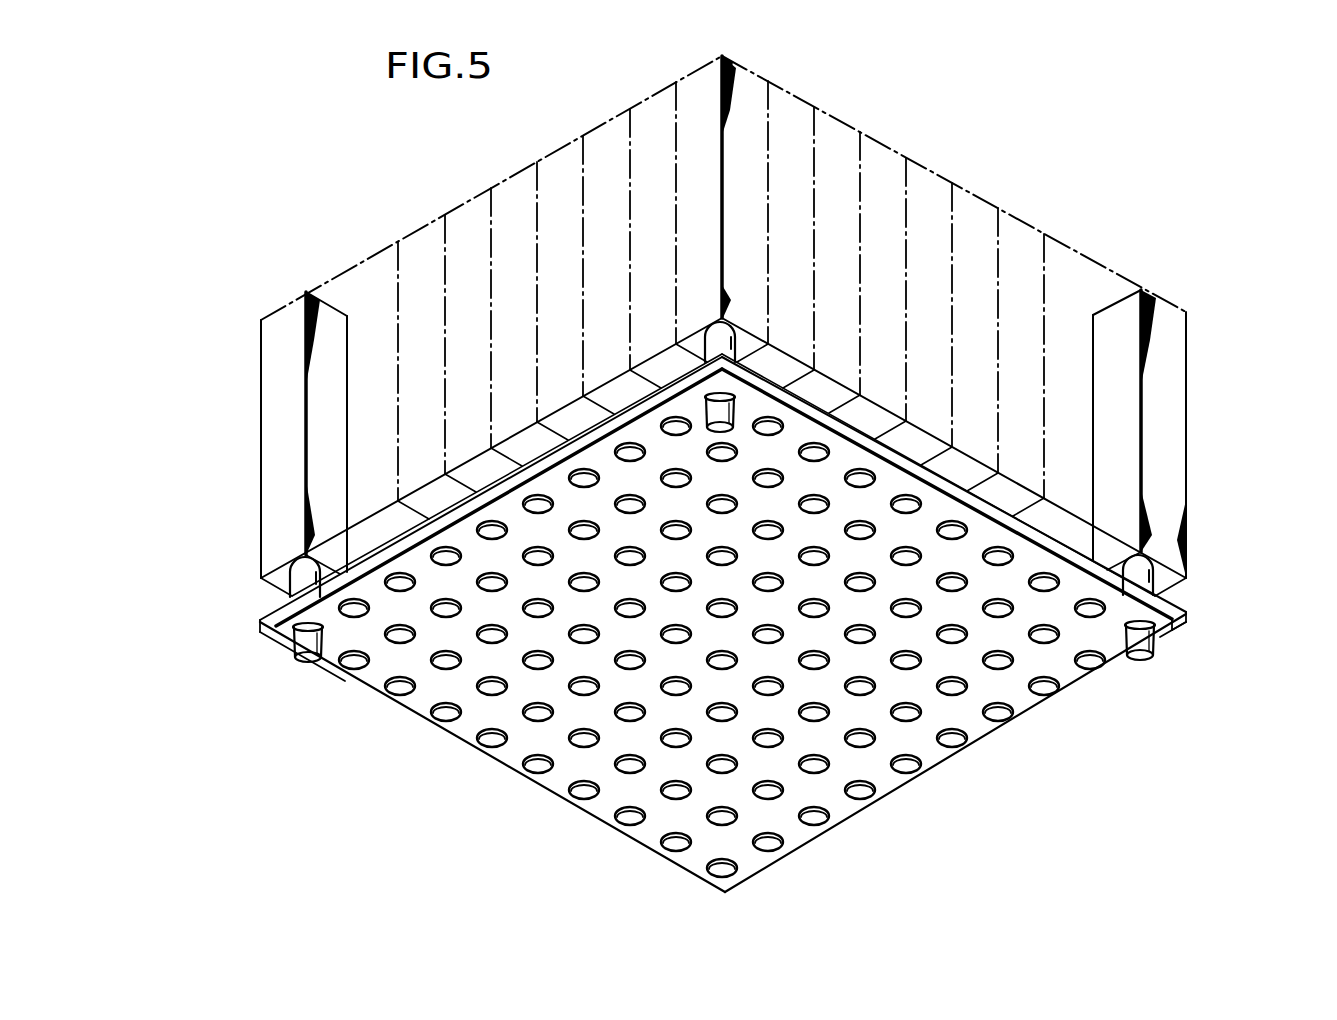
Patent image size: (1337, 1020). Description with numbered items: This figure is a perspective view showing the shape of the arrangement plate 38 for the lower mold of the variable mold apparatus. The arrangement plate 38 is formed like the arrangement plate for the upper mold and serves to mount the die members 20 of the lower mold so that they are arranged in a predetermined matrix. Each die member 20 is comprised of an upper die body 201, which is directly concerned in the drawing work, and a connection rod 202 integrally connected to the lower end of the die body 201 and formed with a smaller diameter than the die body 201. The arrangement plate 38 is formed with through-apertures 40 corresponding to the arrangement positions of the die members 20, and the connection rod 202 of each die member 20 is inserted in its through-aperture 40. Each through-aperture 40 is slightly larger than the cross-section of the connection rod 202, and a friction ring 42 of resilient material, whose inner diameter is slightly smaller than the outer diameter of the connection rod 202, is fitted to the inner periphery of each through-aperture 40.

The die member 20 is at (688, 73).
The die body 201 is at (748, 84).
The connection rod 202 is at (1226, 665).
The arrangement plate 38 is at (899, 790).
The through-aperture 40 is at (1092, 670).
The friction ring 42 is at (1180, 605).